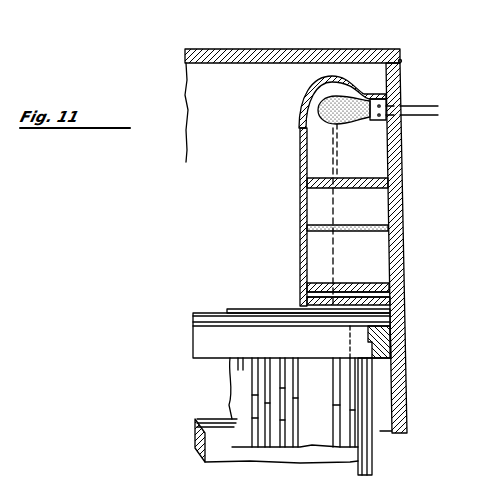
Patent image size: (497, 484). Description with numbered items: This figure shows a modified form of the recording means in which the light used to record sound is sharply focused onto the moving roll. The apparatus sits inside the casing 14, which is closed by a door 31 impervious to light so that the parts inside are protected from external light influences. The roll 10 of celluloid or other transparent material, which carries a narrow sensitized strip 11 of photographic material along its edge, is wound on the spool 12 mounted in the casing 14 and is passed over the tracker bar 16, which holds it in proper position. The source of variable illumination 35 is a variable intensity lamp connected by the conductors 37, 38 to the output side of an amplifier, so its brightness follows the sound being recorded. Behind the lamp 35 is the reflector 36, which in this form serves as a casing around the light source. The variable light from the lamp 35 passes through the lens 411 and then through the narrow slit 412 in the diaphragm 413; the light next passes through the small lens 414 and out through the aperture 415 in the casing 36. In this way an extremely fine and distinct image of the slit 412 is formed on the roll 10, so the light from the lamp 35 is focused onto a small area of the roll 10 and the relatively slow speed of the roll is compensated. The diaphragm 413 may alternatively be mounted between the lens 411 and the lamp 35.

The door 31 is at (300, 58).
The casing 14 is at (405, 203).
The reflector 36 is at (313, 81).
The source of variable illumination 35 is at (328, 109).
The conductor 37 is at (427, 101).
The conductor 38 is at (427, 118).
The lens 411 is at (326, 180).
The slit 412 is at (333, 224).
The diaphragm 413 is at (316, 232).
The small lens 414 is at (333, 287).
The aperture 415 is at (346, 290).
The roll 10 is at (243, 311).
The tracker bar 16 is at (200, 339).
The sensitized strip 11 is at (333, 415).
The spool 12 is at (373, 455).